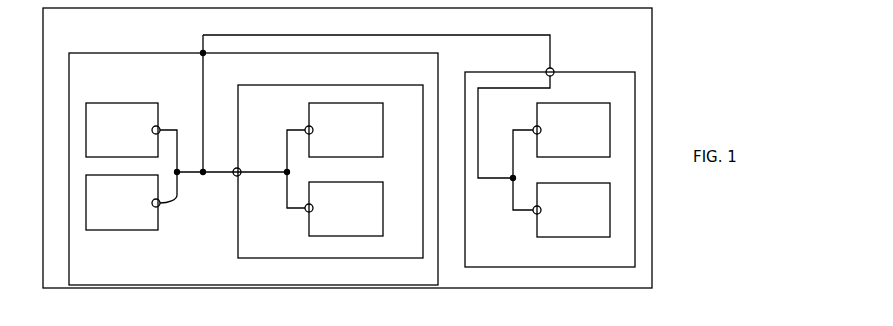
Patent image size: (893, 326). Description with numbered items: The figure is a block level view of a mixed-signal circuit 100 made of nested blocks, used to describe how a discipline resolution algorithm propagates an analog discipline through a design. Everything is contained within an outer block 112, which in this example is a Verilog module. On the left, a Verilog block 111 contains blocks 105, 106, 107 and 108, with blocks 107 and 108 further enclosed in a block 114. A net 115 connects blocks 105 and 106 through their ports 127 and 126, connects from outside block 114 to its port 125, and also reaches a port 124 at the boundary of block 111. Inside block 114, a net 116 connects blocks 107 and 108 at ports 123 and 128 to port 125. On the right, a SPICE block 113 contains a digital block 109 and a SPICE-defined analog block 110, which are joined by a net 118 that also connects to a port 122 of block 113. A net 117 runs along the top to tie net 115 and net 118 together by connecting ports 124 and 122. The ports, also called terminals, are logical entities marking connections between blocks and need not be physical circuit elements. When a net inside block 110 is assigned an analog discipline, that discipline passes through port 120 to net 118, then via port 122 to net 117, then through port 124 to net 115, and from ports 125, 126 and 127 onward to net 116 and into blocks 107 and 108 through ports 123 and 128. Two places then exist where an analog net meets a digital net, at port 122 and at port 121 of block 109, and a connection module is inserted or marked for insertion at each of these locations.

The mixed-signal circuit 100 is at (698, 60).
The block 105 is at (135, 138).
The block 106 is at (135, 210).
The block 107 is at (360, 138).
The block 108 is at (360, 217).
The block 109 is at (588, 138).
The block 110 is at (588, 218).
The block 111 is at (113, 276).
The block 112 is at (91, 41).
The block 113 is at (628, 263).
The block 114 is at (411, 253).
The net 115 is at (180, 208).
The net 116 is at (256, 172).
The net 117 is at (398, 35).
The net 118 is at (532, 88).
The port 120 is at (533, 215).
The port 121 is at (534, 126).
The port 122 is at (556, 72).
The port 123 is at (306, 126).
The port 124 is at (210, 56).
The port 125 is at (234, 178).
The port 126 is at (157, 208).
The port 127 is at (157, 125).
The port 128 is at (307, 214).